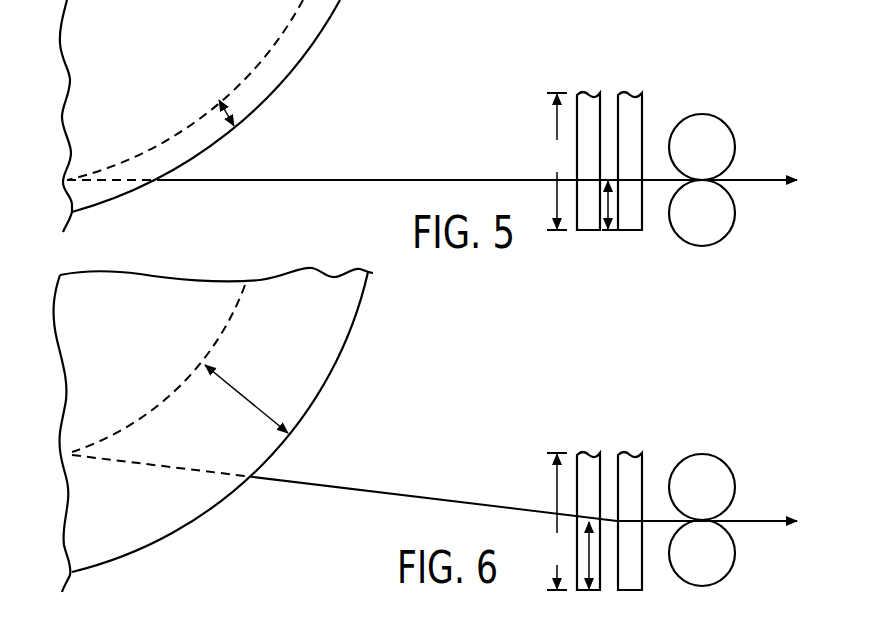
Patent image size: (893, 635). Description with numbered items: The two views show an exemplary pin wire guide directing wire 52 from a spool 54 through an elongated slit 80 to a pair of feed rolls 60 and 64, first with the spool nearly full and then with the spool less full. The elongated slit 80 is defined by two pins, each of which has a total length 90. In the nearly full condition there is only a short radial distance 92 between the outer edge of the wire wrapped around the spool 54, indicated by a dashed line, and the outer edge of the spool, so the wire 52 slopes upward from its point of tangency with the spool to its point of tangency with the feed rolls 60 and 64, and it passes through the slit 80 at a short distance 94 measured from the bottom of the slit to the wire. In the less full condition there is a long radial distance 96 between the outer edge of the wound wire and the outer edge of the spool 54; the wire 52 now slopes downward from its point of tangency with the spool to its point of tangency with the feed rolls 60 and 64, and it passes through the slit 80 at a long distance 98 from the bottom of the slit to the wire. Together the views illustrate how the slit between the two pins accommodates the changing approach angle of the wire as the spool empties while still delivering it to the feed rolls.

In FIG. 5, the wire 52 is at (368, 180).
In FIG. 6, the wire 52 is at (427, 493).
In FIG. 5, the spool 54 is at (141, 63).
In FIG. 6, the spool 54 is at (100, 353).
In FIG. 5, the feed roll 60 is at (720, 118).
In FIG. 6, the feed roll 60 is at (720, 457).
In FIG. 5, the feed roll 64 is at (720, 243).
In FIG. 6, the feed roll 64 is at (720, 583).
In FIG. 5, the elongated slit 80 is at (608, 72).
In FIG. 6, the elongated slit 80 is at (608, 433).
In FIG. 5, the total length 90 is at (557, 161).
In FIG. 6, the total length 90 is at (557, 521).
In FIG. 5, the short radial distance 92 is at (228, 118).
In FIG. 5, the short distance 94 is at (611, 207).
In FIG. 6, the long radial distance 96 is at (233, 388).
In FIG. 6, the long distance 98 is at (597, 567).